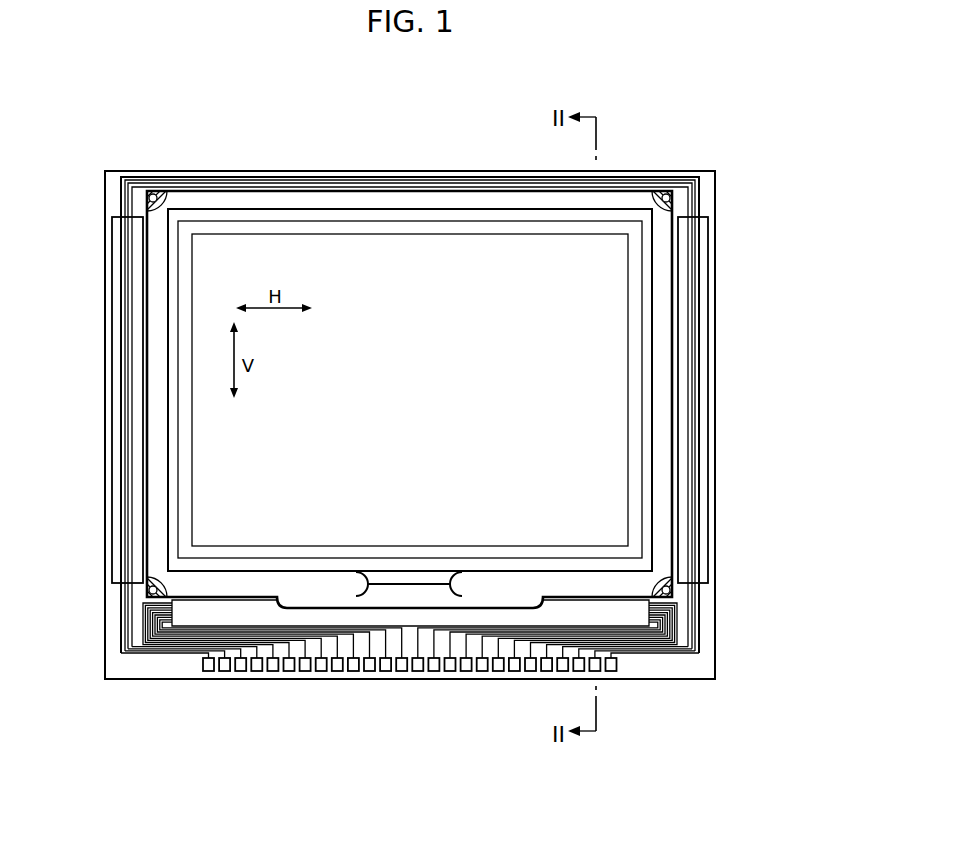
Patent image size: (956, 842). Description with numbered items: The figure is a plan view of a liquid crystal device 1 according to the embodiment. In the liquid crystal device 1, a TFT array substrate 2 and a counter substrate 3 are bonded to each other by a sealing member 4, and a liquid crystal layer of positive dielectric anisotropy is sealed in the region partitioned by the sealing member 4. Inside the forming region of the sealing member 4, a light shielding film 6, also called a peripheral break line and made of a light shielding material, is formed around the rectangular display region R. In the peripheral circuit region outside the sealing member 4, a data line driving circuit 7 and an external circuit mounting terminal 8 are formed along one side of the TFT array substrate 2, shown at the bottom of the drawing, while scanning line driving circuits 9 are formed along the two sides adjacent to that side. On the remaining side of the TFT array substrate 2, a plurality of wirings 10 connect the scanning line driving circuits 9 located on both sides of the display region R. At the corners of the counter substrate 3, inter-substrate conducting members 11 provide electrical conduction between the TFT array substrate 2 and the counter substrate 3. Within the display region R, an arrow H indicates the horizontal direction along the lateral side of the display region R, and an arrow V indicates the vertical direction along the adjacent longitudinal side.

The liquid crystal device 1 is at (497, 112).
The TFT array substrate 2 is at (322, 176).
The counter substrate 3 is at (390, 190).
The sealing member 4 is at (656, 325).
The light shielding film 6 is at (636, 296).
The data line driving circuit 7 is at (212, 618).
The external circuit mounting terminal 8 is at (270, 664).
The scanning line driving circuits 9 is at (125, 378).
The wirings 10 is at (224, 183).
The inter-substrate conducting members 11 is at (152, 194).
The display region R is at (210, 475).